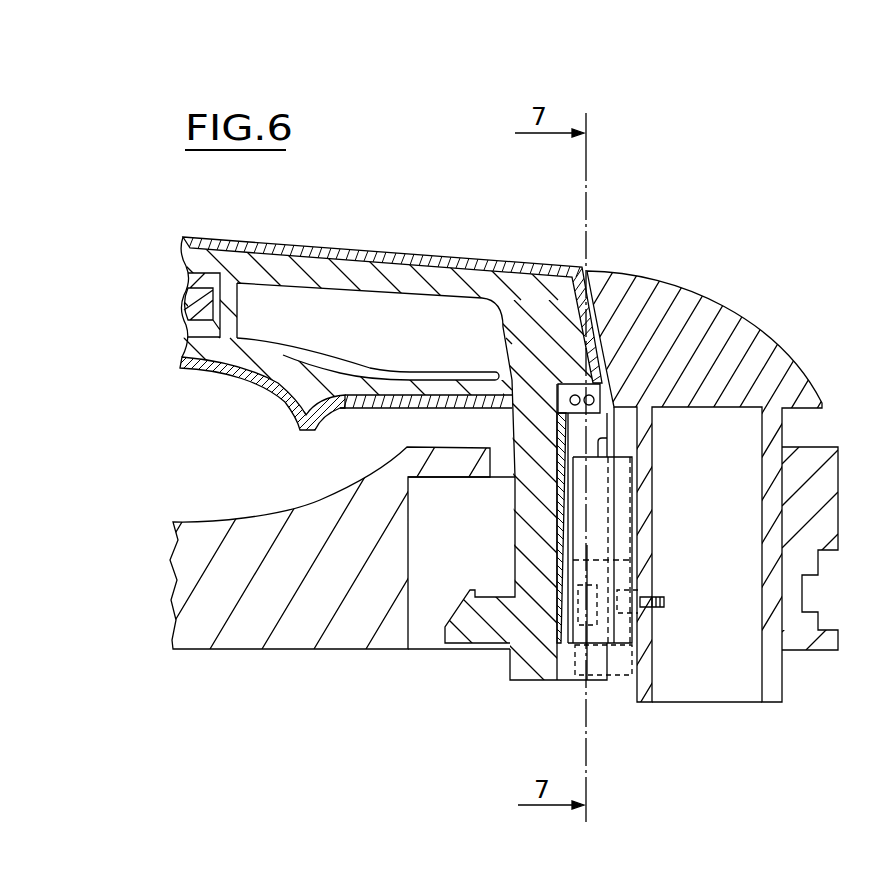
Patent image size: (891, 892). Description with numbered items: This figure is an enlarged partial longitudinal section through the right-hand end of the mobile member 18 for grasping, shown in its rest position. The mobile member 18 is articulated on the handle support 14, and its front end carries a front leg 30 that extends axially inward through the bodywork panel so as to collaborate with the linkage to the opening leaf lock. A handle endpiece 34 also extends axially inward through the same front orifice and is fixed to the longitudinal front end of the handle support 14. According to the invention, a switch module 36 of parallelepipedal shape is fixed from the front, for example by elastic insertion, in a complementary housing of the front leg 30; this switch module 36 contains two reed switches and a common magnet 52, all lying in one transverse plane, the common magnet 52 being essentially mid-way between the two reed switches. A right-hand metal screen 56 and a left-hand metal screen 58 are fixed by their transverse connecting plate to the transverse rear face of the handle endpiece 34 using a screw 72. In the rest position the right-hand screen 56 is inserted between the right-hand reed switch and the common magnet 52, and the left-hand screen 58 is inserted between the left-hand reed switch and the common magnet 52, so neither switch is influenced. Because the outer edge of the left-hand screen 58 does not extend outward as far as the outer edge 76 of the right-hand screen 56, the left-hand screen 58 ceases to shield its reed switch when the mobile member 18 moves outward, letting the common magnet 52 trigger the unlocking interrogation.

The handle support 14 is at (325, 651).
The mobile member for grasping 18 is at (385, 247).
The front leg 30 is at (514, 533).
The handle endpiece 34 is at (751, 320).
The switch module 36 is at (557, 495).
The common magnet 52 is at (600, 621).
The right-hand metal screen 56 is at (618, 512).
The left-hand metal screen 58 is at (620, 663).
The screw 72 is at (660, 598).
The outer edge of the right-hand screen 76 is at (600, 440).